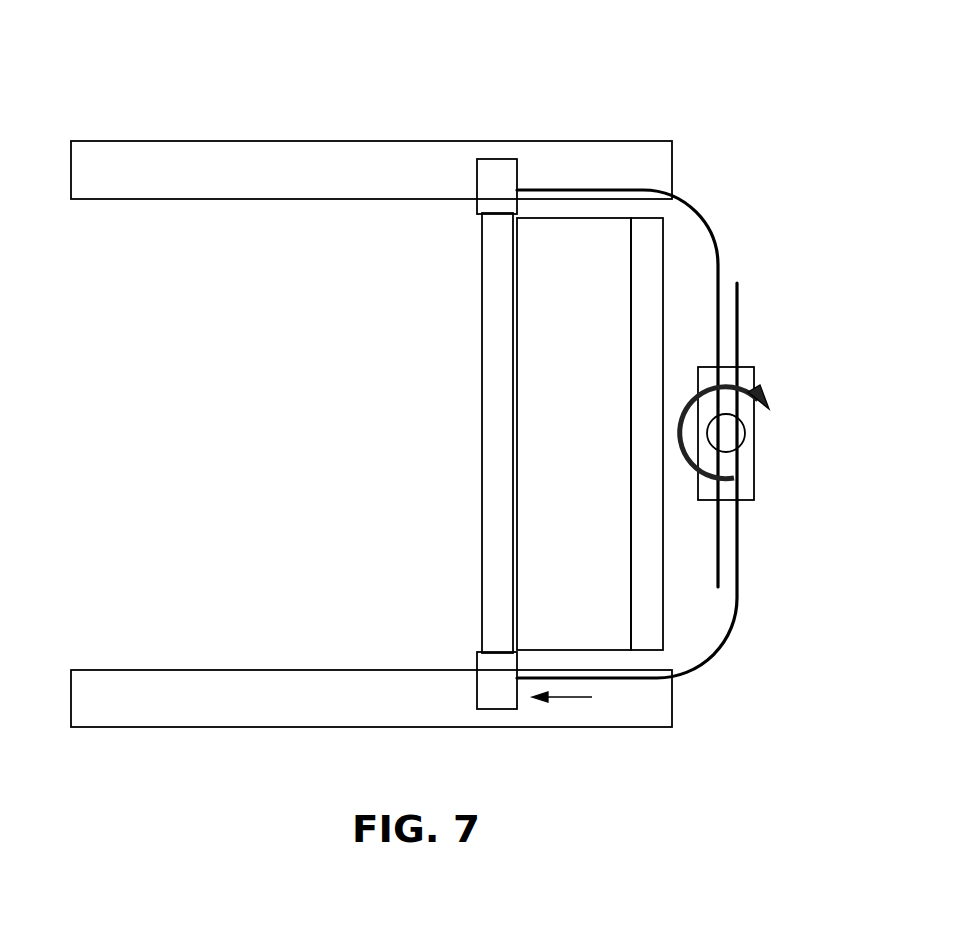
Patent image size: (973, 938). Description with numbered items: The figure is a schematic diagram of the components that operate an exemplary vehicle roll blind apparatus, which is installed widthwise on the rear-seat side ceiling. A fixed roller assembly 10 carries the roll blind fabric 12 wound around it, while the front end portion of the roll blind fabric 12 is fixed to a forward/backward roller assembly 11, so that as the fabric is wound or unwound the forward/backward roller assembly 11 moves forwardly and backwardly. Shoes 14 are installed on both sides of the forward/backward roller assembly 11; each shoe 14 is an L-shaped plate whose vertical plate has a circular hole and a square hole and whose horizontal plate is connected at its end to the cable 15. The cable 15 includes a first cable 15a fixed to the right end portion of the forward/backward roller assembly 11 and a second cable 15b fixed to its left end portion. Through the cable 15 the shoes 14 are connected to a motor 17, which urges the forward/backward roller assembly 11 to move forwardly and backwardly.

The fixed roller assembly 10 is at (597, 434).
The forward/backward roller assembly 11 is at (468, 410).
The roll blind fabric 12 is at (535, 535).
The shoe 14 is at (498, 178).
The cable 15 is at (728, 396).
The first cable 15a is at (713, 232).
The second cable 15b is at (717, 657).
The motor 17 is at (754, 478).